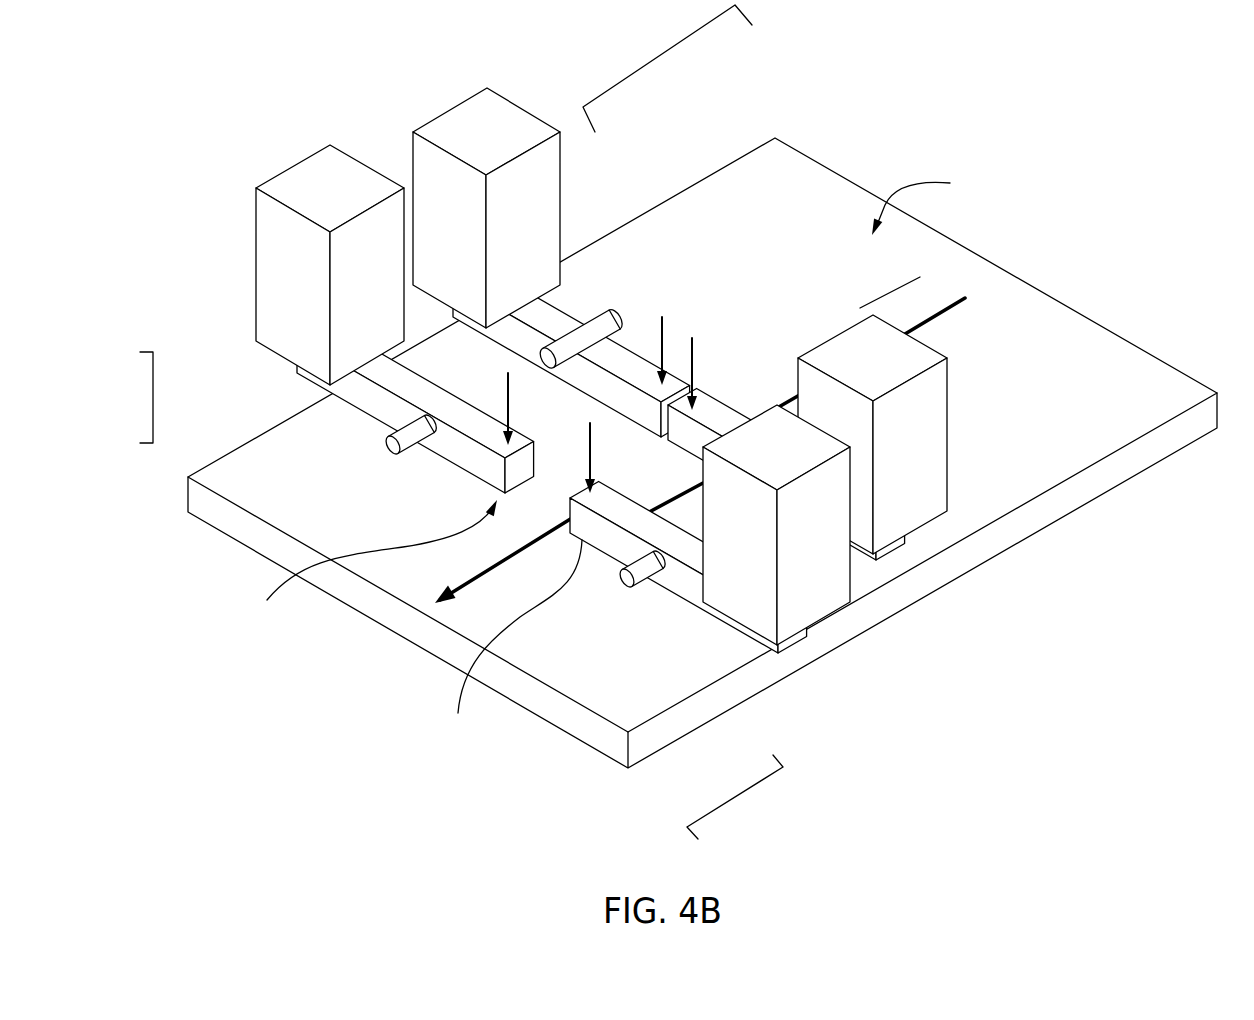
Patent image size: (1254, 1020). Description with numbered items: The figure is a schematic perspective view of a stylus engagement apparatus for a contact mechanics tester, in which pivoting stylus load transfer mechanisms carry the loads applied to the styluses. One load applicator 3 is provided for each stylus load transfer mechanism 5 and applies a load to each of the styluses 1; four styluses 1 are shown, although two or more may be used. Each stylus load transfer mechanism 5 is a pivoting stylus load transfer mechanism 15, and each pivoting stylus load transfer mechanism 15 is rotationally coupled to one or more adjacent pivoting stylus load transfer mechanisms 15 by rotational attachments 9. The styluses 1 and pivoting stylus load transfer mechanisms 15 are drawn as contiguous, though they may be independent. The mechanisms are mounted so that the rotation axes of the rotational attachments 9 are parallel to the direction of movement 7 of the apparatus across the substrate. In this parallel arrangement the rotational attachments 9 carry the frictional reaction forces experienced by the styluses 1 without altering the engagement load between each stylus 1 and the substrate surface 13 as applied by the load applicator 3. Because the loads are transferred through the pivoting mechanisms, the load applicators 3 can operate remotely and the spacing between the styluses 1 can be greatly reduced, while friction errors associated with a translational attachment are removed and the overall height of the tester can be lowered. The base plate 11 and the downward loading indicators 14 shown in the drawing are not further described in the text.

The stylus 1 is at (415, 623).
The load applicator 3 is at (815, 605).
The stylus load transfer mechanism 5 is at (745, 795).
The direction of movement 7 is at (700, 440).
The rotational attachment 9 is at (660, 577).
The base plate 11 is at (1117, 333).
The substrate surface 13 is at (927, 202).
The pressing direction 14 is at (572, 498).
The pivoting stylus load transfer mechanism 15 is at (683, 582).